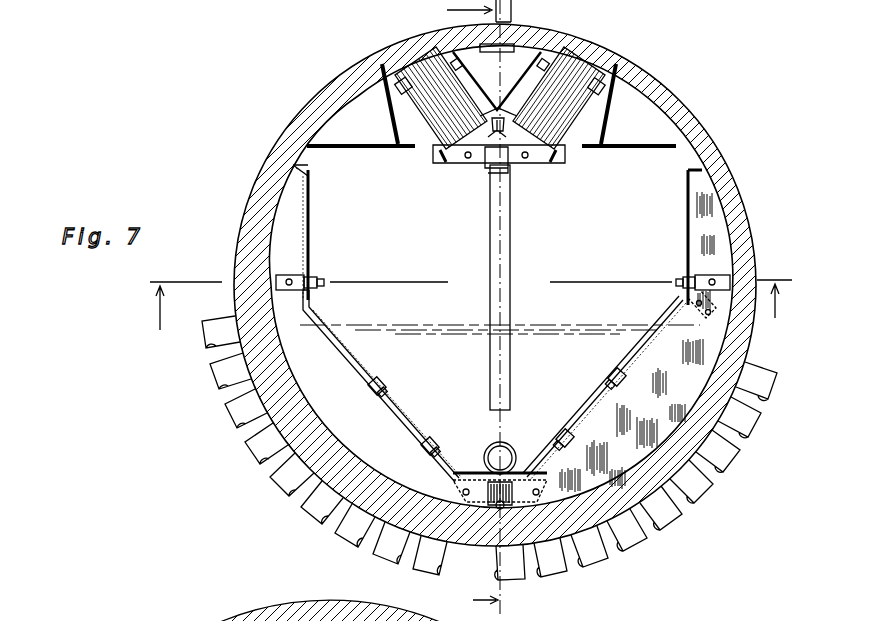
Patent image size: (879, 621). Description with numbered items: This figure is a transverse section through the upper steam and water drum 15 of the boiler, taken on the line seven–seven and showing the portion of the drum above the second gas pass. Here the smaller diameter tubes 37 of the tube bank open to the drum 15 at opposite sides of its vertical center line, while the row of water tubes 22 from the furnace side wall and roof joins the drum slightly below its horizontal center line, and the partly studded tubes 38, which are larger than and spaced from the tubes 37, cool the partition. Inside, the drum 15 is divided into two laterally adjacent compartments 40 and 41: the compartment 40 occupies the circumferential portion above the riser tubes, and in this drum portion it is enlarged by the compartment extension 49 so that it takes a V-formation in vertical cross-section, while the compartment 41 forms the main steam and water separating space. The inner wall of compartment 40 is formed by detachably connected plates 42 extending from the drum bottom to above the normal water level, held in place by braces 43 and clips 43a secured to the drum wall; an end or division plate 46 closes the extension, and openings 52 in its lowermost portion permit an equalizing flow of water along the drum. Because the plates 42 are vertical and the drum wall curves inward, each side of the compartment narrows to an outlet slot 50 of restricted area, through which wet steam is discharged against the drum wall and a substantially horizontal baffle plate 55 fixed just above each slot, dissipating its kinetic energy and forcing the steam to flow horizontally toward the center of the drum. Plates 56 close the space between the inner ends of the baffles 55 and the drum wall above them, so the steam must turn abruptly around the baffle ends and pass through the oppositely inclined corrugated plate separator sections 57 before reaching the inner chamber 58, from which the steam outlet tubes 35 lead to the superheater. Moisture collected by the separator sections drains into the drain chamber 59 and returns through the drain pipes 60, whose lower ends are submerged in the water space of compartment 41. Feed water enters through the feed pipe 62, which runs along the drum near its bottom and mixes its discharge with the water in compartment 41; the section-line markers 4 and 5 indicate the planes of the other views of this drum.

The section line 4- 4 is at (463, 307).
The section line 5- 5 is at (471, 318).
The upper steam and water drum 15 is at (680, 101).
The water tubes 22 is at (204, 340).
The steam outlet tubes 35 is at (513, 12).
The tubes 37 is at (268, 468).
The partly studded tubes 38 is at (212, 386).
The compartment 40 is at (370, 425).
The compartment 41 is at (480, 412).
The detachably connected plates 42 is at (355, 348).
The braces 43 is at (287, 275).
The clips 43a is at (300, 180).
The plate 46 is at (607, 425).
The compartment extension 49 is at (689, 381).
The outlet slot 50 is at (305, 165).
The openings 52 is at (501, 508).
The baffle plates 55 is at (359, 150).
The plates 56 is at (388, 115).
The corrugated plate separator sections 57 is at (437, 103).
The inner chamber 58 is at (505, 81).
The drain chamber 59 is at (484, 133).
The drain pipes 60 is at (510, 378).
The feed pipe 62 is at (507, 443).